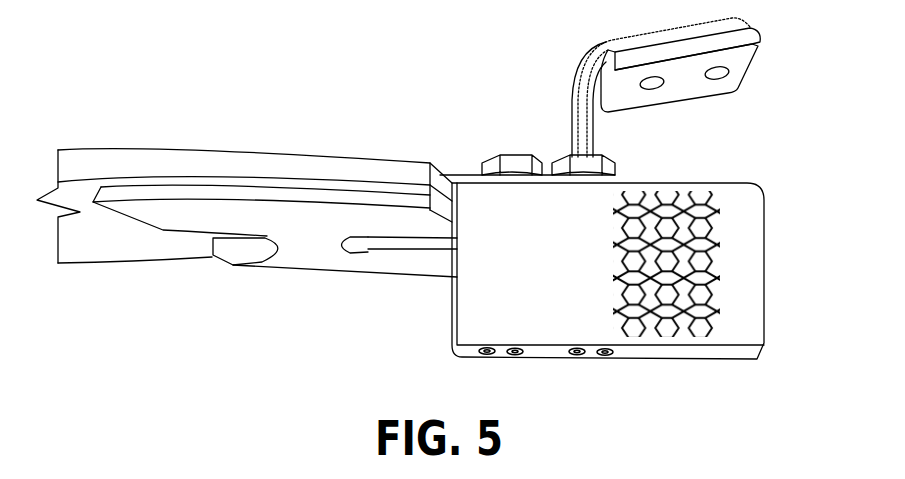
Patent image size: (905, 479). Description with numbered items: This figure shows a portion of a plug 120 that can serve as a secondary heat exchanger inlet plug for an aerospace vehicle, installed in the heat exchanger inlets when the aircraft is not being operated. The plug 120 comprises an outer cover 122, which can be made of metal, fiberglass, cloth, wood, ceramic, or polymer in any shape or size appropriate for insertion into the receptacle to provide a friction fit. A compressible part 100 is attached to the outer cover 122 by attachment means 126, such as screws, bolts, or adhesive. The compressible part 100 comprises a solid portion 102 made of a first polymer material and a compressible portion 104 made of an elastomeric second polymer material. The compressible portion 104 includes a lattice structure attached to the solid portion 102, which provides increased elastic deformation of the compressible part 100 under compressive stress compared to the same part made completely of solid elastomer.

The compressible part 100 is at (765, 273).
The solid portion 102 is at (490, 355).
The compressible portion 104 is at (697, 188).
The plug 120 is at (373, 88).
The outer cover 122 is at (205, 155).
The attachment means 126 is at (556, 163).